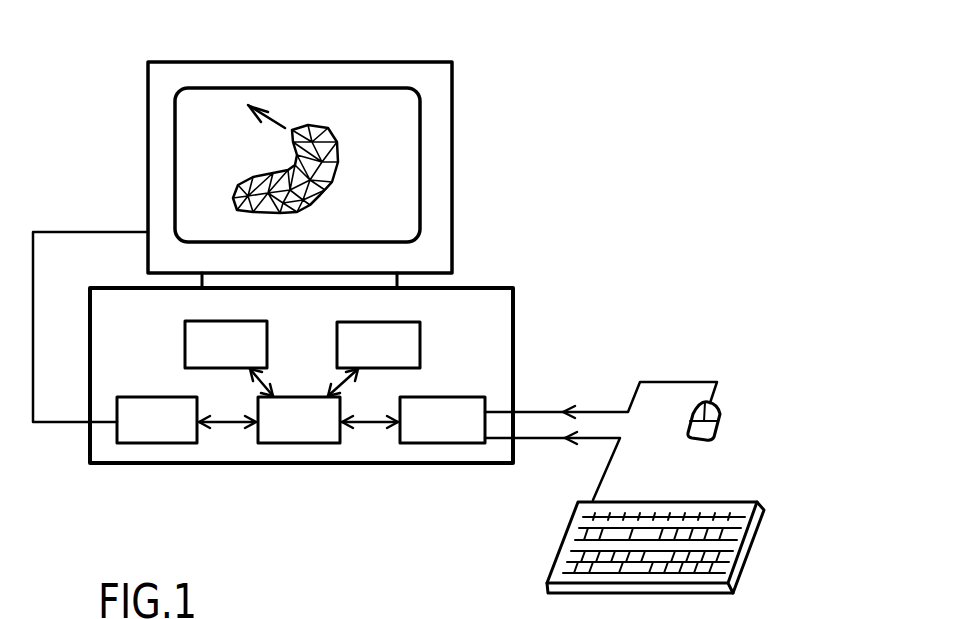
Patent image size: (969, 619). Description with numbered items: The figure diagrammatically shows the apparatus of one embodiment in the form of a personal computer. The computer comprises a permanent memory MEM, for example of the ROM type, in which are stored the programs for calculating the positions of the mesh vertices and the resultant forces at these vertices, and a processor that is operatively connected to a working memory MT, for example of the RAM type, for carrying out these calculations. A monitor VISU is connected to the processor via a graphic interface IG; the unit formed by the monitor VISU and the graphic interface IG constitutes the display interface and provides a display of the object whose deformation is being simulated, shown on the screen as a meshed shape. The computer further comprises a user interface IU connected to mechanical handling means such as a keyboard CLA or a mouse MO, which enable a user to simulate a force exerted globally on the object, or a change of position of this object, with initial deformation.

The monitor VISU is at (365, 113).
The working memory MT is at (197, 349).
The permanent memory MEM is at (408, 348).
The graphic interface IG is at (160, 430).
The user interface IU is at (428, 430).
The mouse MO is at (725, 421).
The keyboard CLA is at (737, 494).